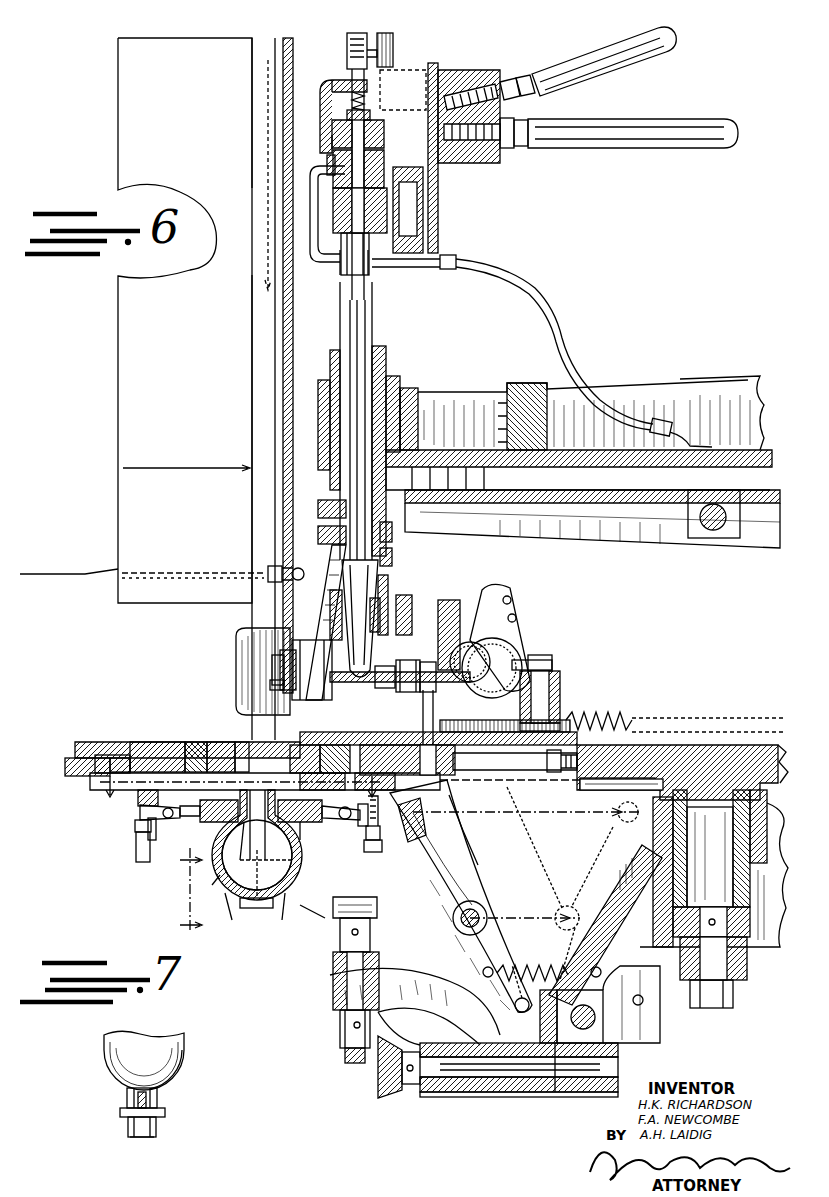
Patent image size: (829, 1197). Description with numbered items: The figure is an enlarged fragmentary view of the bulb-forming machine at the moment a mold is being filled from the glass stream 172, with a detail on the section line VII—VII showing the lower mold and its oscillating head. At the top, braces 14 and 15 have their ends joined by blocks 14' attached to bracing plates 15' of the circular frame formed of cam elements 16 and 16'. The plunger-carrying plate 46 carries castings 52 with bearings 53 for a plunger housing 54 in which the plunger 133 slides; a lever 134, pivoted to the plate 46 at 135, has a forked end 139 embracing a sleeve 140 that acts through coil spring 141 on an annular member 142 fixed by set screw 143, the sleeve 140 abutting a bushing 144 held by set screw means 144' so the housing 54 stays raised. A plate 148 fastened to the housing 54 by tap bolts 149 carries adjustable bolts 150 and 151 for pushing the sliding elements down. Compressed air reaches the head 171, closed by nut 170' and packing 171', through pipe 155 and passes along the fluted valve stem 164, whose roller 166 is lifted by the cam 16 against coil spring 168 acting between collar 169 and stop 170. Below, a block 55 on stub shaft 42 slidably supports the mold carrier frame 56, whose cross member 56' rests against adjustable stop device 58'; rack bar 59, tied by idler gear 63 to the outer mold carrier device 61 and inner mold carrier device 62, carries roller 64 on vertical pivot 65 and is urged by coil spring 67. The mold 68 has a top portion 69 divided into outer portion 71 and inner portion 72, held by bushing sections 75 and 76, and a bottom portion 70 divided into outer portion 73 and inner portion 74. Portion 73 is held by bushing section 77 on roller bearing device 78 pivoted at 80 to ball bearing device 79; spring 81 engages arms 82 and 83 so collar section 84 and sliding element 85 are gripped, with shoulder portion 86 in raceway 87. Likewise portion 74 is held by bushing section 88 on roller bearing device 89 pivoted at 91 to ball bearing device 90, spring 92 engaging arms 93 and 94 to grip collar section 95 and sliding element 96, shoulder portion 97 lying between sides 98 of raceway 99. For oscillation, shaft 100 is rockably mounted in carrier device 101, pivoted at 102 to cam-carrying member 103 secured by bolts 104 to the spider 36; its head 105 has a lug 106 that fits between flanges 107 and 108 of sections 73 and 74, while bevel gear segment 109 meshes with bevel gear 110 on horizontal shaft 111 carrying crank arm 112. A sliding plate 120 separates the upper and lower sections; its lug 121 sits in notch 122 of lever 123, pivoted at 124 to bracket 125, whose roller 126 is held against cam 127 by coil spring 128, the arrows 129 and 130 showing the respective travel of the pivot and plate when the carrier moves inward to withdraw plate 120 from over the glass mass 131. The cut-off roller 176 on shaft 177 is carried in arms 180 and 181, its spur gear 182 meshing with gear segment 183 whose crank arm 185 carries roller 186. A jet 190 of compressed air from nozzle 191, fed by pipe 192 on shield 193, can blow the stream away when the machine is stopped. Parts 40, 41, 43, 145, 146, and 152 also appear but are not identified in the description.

In FIG. 6, the braces 14 is at (588, 61).
In FIG. 6, the blocks 14' is at (498, 135).
In FIG. 6, the braces 15 is at (619, 120).
In FIG. 6, the bracing plates 15' is at (469, 102).
In FIG. 6, the cam element 16 is at (421, 68).
In FIG. 6, the cam element 16' is at (459, 158).
In FIG. 6, the mold-carrying spider 36 is at (765, 950).
In FIG. 6, the housing 40 is at (767, 806).
In FIG. 6, the bore 41 is at (735, 779).
In FIG. 6, the stub shaft 42 is at (692, 828).
In FIG. 6, the block 43 is at (700, 745).
In FIG. 6, the plunger-carrying plate 46 is at (700, 385).
In FIG. 6, the casting 52 is at (462, 398).
In FIG. 6, the bearing 53 is at (318, 384).
In FIG. 6, the plunger housing 54 is at (392, 372).
In FIG. 6, the block 55 is at (770, 744).
In FIG. 6, the mold carrier frame 56 is at (87, 746).
In FIG. 6, the cross member 56' is at (510, 794).
In FIG. 6, the adjustable stop device 58' is at (599, 792).
In FIG. 6, the rack bar 59 is at (498, 735).
In FIG. 6, the outer mold carrier device 61 is at (140, 742).
In FIG. 6, the inner mold carrier device 62 is at (358, 742).
In FIG. 6, the idler gear 63 is at (452, 770).
In FIG. 6, the roller 64 is at (562, 700).
In FIG. 6, the vertical pivot 65 is at (554, 668).
In FIG. 6, the coil spring 67 is at (618, 714).
In FIG. 6, the mold 68 is at (221, 920).
In FIG. 7, the mold 68 is at (104, 1078).
In FIG. 6, the top portion 69 is at (240, 742).
In FIG. 6, the bottom portion 70 is at (284, 917).
In FIG. 6, the outer portion 71 is at (168, 742).
In FIG. 6, the inner portion 72 is at (298, 742).
In FIG. 6, the outer portion 73 is at (185, 892).
In FIG. 7, the outer portion 73 is at (185, 1070).
In FIG. 6, the inner portion 74 is at (312, 915).
In FIG. 6, the bushing section 75 is at (195, 742).
In FIG. 6, the bushing section 76 is at (252, 850).
In FIG. 6, the bushing section 77 is at (218, 822).
In FIG. 6, the roller bearing device 78 is at (170, 820).
In FIG. 6, the ball bearing device 79 is at (125, 786).
In FIG. 6, the pivot 80 is at (150, 840).
In FIG. 6, the spring 81 is at (135, 826).
In FIG. 6, the arm 82 is at (138, 850).
In FIG. 6, the arm 83 is at (138, 798).
In FIG. 6, the depending annular collar section 84 is at (130, 764).
In FIG. 6, the sliding element 85 is at (150, 742).
In FIG. 6, the shoulder portion 86 is at (212, 822).
In FIG. 6, the roller bearing raceway 87 is at (244, 868).
In FIG. 6, the bushing section 88 is at (262, 872).
In FIG. 6, the roller bearing device 89 is at (345, 820).
In FIG. 6, the ball bearing device 90 is at (372, 780).
In FIG. 6, the pivot 91 is at (362, 826).
In FIG. 6, the spring 92 is at (382, 846).
In FIG. 6, the arm 93 is at (374, 840).
In FIG. 6, the arm 94 is at (378, 820).
In FIG. 6, the depending annular collar section 95 is at (305, 822).
In FIG. 6, the sliding element 96 is at (332, 742).
In FIG. 6, the shoulder portion 97 is at (300, 840).
In FIG. 6, the sides 98 is at (338, 780).
In FIG. 6, the roller bearing raceway 99 is at (262, 858).
In FIG. 6, the shaft 100 is at (340, 988).
In FIG. 6, the carrier device 101 is at (418, 978).
In FIG. 6, the pivot 102 is at (595, 1020).
In FIG. 6, the cam-carrying member 103 is at (618, 1008).
In FIG. 6, the bolts 104 is at (640, 855).
In FIG. 6, the head 105 is at (370, 928).
In FIG. 7, the head 105 is at (130, 1138).
In FIG. 6, the flange or lug 106 is at (333, 905).
In FIG. 7, the flange or lug 106 is at (165, 1115).
In FIG. 6, the flange 107 is at (252, 908).
In FIG. 7, the flange 107 is at (128, 1098).
In FIG. 7, the flange 108 is at (157, 1098).
In FIG. 6, the bevel gear segment 109 is at (348, 1058).
In FIG. 6, the bevel gear 110 is at (378, 1090).
In FIG. 6, the horizontal shaft 111 is at (465, 1097).
In FIG. 6, the crank arm 112 is at (622, 1058).
In FIG. 6, the sliding plate 120 is at (255, 822).
In FIG. 6, the lug 121 is at (438, 826).
In FIG. 6, the notch 122 is at (466, 845).
In FIG. 6, the lever 123 is at (470, 900).
In FIG. 6, the pivot 124 is at (487, 918).
In FIG. 6, the bracket 125 is at (485, 870).
In FIG. 6, the roller 126 is at (520, 964).
In FIG. 6, the cam 127 is at (550, 1045).
In FIG. 6, the coil spring 128 is at (568, 962).
In FIG. 6, the arrow 129 is at (548, 905).
In FIG. 6, the arrow 130 is at (565, 812).
In FIG. 6, the mass of glass 131 is at (220, 742).
In FIG. 6, the plunger 133 is at (375, 288).
In FIG. 6, the lever 134 is at (630, 532).
In FIG. 6, the pivot 135 is at (712, 538).
In FIG. 6, the forked end 139 is at (406, 495).
In FIG. 6, the sleeve 140 is at (318, 508).
In FIG. 6, the coil spring 141 is at (392, 532).
In FIG. 6, the annular member 142 is at (392, 553).
In FIG. 6, the set screw 143 is at (324, 560).
In FIG. 6, the bushing 144 is at (399, 439).
In FIG. 6, the set screw means 144' is at (319, 404).
In FIG. 6, the collar 145 is at (384, 690).
In FIG. 6, the nut 146 is at (685, 980).
In FIG. 6, the plate 148 is at (270, 685).
In FIG. 6, the tap bolts 149 is at (362, 670).
In FIG. 6, the bolt 150 is at (274, 662).
In FIG. 6, the bolt 151 is at (430, 672).
In FIG. 6, the cylinder 152 is at (423, 200).
In FIG. 6, the pipe 155 is at (558, 325).
In FIG. 6, the valve stem 164 is at (345, 170).
In FIG. 6, the roller 166 is at (393, 42).
In FIG. 6, the coil spring 168 is at (366, 98).
In FIG. 6, the collar 169 is at (370, 114).
In FIG. 6, the stop 170 is at (335, 100).
In FIG. 6, the nut 170' is at (378, 133).
In FIG. 6, the head 171 is at (274, 151).
In FIG. 6, the packing 171' is at (378, 184).
In FIG. 6, the stream of glass 172 is at (252, 355).
In FIG. 6, the roller 176 is at (238, 660).
In FIG. 6, the shaft 177 is at (296, 640).
In FIG. 6, the arm 180 is at (284, 650).
In FIG. 6, the arm 181 is at (462, 725).
In FIG. 6, the spur gear 182 is at (490, 648).
In FIG. 6, the spur gear segment 183 is at (505, 630).
In FIG. 6, the crank arm 185 is at (512, 636).
In FIG. 6, the roller 186 is at (545, 660).
In FIG. 6, the jet of compressed air 190 is at (177, 567).
In FIG. 6, the nozzle 191 is at (270, 570).
In FIG. 6, the pipe 192 is at (294, 568).
In FIG. 6, the shield 193 is at (205, 420).